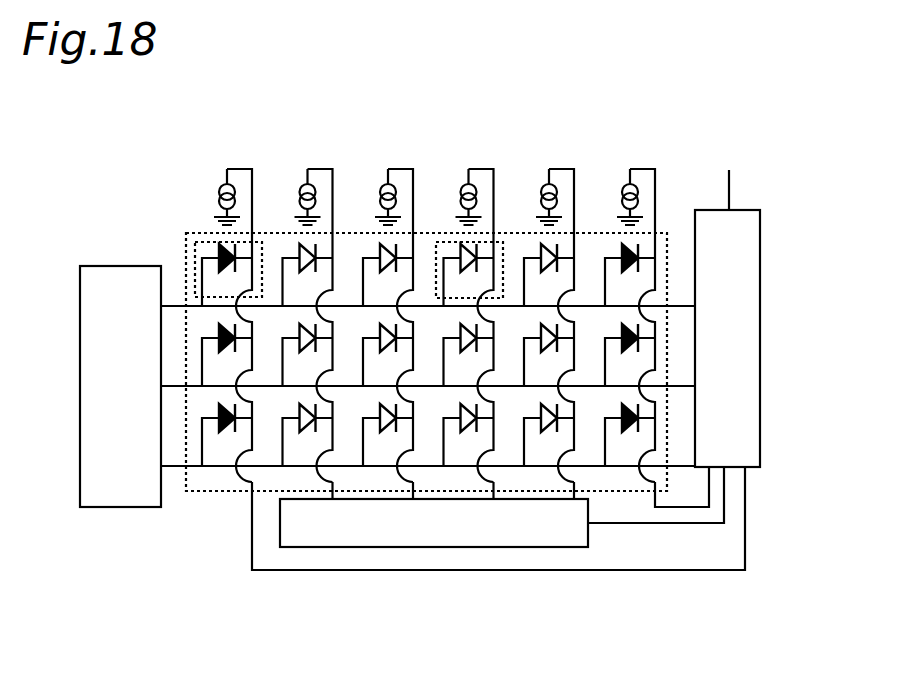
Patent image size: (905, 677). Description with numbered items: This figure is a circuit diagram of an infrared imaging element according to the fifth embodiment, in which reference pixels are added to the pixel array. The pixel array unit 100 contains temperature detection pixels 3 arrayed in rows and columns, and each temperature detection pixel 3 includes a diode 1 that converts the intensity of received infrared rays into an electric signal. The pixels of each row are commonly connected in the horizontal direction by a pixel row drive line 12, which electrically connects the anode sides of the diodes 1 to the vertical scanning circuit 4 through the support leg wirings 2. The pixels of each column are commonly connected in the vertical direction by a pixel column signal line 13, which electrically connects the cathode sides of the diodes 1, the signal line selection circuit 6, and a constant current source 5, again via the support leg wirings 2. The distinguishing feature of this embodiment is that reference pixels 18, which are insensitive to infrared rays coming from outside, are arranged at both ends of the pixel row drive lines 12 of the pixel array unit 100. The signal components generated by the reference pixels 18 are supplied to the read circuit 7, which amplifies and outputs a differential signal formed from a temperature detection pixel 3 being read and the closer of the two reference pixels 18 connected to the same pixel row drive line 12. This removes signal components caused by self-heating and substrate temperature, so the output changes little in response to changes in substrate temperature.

The diode 1 is at (218, 250).
The support leg wiring 2 is at (195, 285).
The temperature detection pixel 3 is at (450, 243).
The vertical scanning circuit 4 is at (97, 265).
The constant current source 5 is at (622, 189).
The signal line selection circuit 6 is at (415, 545).
The read circuit 7 is at (762, 292).
The pixel row drive line 12 is at (173, 467).
The pixel column signal line 13 is at (654, 190).
The reference pixel 18 is at (195, 248).
The pixel array unit 100 is at (375, 233).